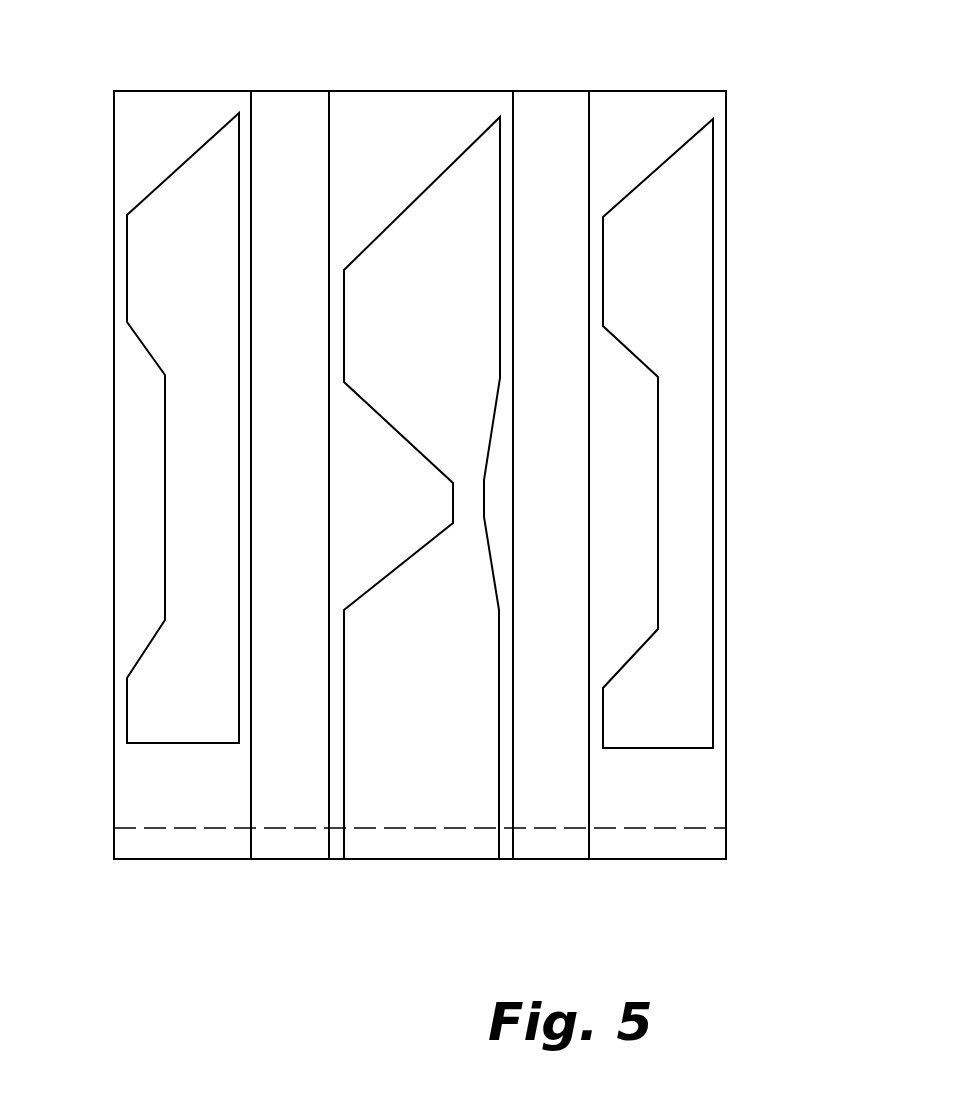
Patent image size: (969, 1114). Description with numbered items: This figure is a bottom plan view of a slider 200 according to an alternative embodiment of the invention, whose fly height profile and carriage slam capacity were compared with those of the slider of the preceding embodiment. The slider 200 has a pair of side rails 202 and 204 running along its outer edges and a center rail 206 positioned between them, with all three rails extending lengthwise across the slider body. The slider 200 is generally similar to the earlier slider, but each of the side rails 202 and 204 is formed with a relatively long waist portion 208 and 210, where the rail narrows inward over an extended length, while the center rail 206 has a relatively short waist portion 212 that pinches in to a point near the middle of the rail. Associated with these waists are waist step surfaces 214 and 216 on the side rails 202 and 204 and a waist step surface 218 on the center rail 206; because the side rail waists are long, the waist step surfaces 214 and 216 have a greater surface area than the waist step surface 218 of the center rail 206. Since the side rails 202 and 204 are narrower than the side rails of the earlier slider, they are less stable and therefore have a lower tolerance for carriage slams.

The slider 200 is at (310, 902).
The side rail 202 is at (190, 88).
The side rail 204 is at (655, 88).
The center rail 206 is at (424, 88).
The waist portion 208 is at (190, 472).
The waist portion 210 is at (697, 480).
The waist portion 212 is at (465, 507).
The waist step surface 214 is at (133, 520).
The waist step surface 216 is at (635, 547).
The waist step surface 218 is at (365, 540).